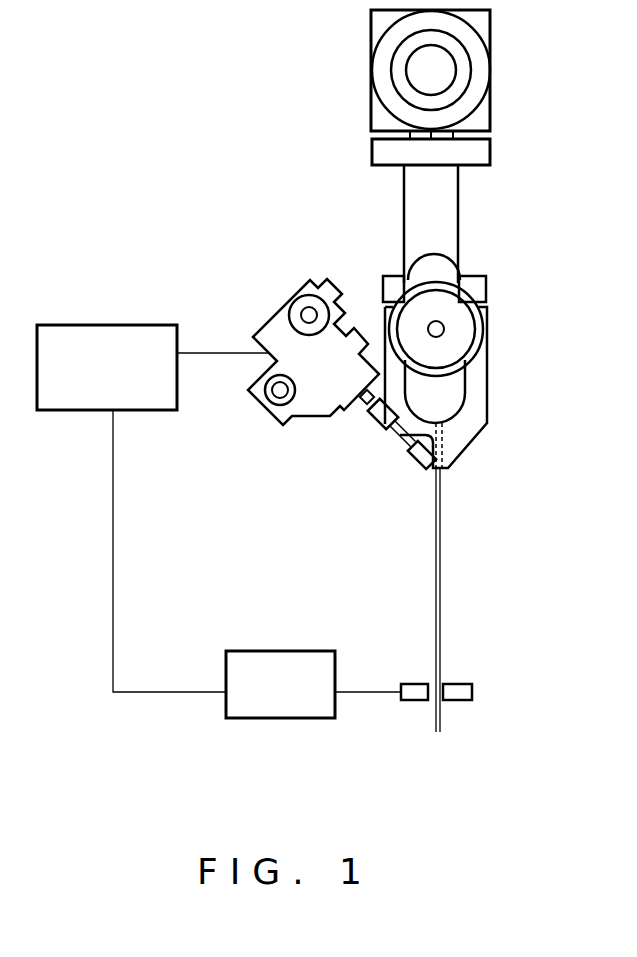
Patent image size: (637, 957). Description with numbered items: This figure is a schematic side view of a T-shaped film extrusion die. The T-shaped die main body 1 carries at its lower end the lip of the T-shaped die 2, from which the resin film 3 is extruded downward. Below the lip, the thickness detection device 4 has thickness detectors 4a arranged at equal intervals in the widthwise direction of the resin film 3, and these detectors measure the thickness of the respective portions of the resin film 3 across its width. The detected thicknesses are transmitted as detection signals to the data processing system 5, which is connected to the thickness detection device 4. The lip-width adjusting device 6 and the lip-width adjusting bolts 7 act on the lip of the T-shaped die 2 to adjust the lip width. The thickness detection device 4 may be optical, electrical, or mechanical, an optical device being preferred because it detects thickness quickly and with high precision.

The T-shaped die main body 1 is at (492, 303).
The lip of the T-shaped die 2 is at (417, 458).
The resin film 3 is at (441, 594).
The thickness detection device 4 is at (262, 663).
The thickness detectors 4a is at (412, 683).
The data processing system 5 is at (167, 406).
The lip-width adjusting device 6 is at (312, 410).
The lip-width adjusting bolts 7 is at (382, 428).